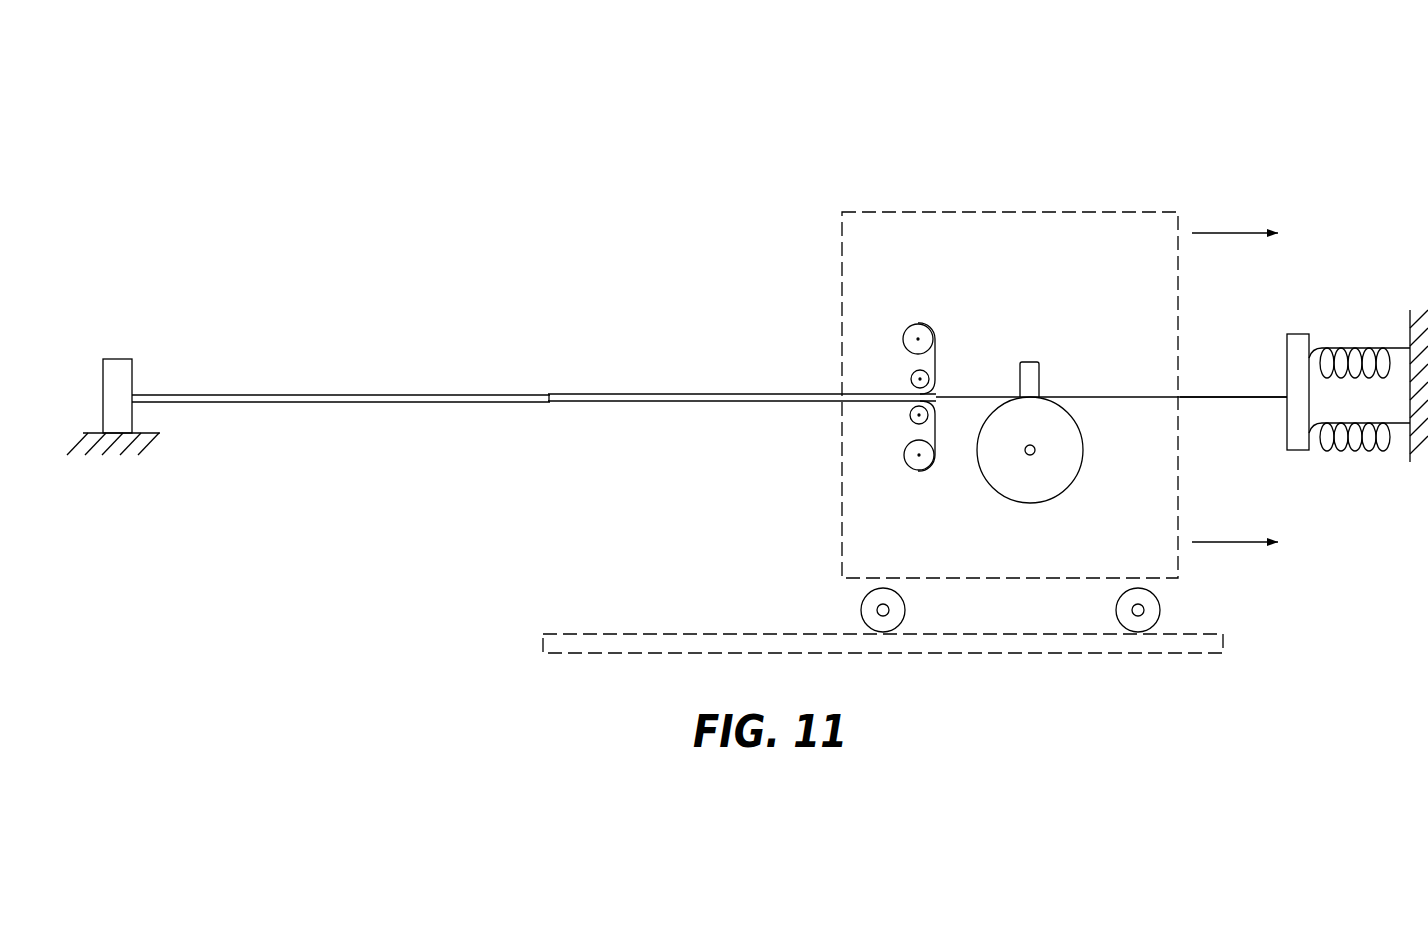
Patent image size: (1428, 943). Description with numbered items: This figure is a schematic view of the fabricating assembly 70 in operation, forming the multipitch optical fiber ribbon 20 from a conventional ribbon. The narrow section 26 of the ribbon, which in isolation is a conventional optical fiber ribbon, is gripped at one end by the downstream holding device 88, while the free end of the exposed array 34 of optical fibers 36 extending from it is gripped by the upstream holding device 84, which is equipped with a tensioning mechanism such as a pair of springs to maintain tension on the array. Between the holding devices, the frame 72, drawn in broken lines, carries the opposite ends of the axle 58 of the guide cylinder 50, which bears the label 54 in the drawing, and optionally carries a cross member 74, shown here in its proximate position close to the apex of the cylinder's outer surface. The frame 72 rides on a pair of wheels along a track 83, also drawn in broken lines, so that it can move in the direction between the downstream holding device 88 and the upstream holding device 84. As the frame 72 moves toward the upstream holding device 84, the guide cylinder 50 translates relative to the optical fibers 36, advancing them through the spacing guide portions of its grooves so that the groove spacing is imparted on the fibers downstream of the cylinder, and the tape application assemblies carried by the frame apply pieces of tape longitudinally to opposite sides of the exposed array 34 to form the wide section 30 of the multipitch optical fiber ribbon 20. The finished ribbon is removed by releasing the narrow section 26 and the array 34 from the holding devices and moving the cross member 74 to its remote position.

The multipitch optical fiber ribbon 20 is at (534, 423).
The narrow section 26 is at (425, 391).
The wide section 30 is at (594, 381).
The exposed array 34 is at (1218, 392).
The optical fibers 36 is at (1250, 399).
The guide cylinder 50 is at (1060, 473).
The drive 54 is at (1010, 437).
The axle 58 is at (1035, 448).
The fabricating assembly 70 is at (1060, 309).
The frame 72 is at (1180, 212).
The cross member 74 is at (1040, 372).
The track 83 is at (600, 655).
The upstream holding device 84 is at (1299, 334).
The downstream holding device 88 is at (117, 358).